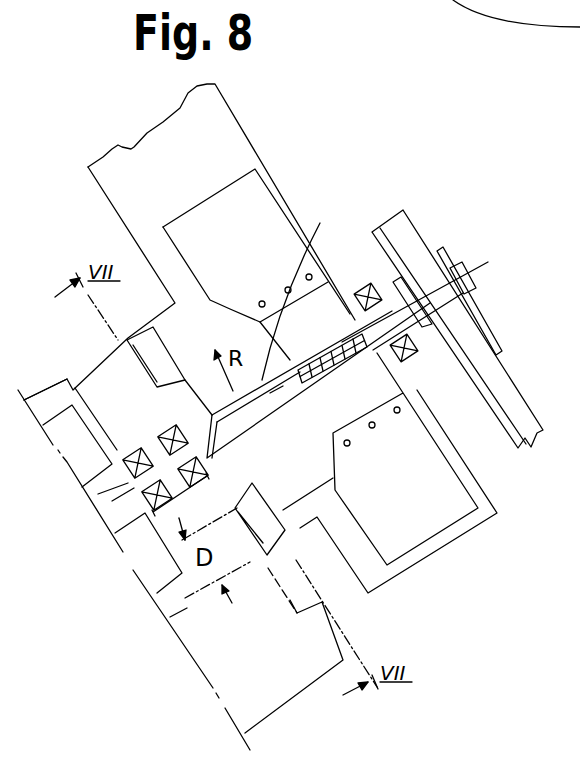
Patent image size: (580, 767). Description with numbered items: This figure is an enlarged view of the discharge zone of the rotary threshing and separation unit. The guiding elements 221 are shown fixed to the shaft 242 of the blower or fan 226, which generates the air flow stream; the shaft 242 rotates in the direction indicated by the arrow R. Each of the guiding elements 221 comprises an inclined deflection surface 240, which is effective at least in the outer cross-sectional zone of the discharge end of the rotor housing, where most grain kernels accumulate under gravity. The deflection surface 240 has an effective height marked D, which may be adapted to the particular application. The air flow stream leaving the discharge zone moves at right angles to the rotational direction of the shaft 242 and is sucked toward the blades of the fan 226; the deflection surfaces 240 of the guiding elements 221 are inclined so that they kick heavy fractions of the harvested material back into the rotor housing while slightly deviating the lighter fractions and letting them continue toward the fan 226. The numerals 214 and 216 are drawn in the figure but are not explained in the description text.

The base plate 214 is at (187, 612).
The housing bracket 216 is at (133, 552).
The guiding elements 221 is at (318, 322).
The blower or fan 226 is at (248, 208).
The inclined deflection surface 240 is at (125, 340).
The shaft 242 is at (407, 323).